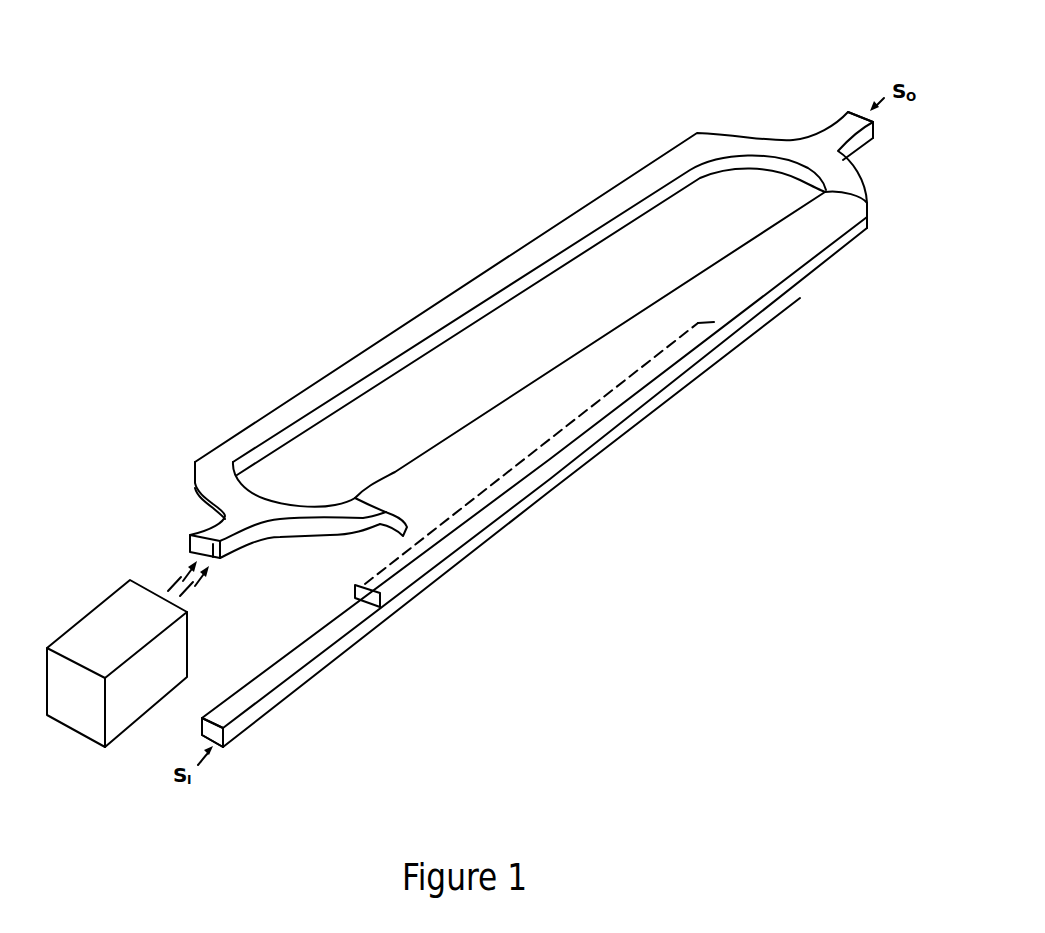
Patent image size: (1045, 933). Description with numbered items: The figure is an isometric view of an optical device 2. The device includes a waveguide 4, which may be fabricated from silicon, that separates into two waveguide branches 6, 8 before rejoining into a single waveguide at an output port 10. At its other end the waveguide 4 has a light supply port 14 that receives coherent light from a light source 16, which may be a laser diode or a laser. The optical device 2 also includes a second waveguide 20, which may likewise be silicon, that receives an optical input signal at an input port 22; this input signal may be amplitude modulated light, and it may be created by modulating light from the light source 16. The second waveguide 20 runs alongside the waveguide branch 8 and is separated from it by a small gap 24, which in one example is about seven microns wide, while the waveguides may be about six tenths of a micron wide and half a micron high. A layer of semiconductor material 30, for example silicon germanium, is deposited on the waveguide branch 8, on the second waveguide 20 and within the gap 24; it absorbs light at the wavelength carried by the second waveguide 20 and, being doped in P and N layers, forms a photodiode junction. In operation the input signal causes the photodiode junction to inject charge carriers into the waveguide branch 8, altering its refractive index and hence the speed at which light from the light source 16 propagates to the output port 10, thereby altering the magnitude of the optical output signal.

The optical device 2 is at (636, 60).
The waveguide 4 is at (224, 522).
The waveguide branch 6 is at (479, 299).
The waveguide branch 8 is at (621, 326).
The output port 10 is at (879, 131).
The light supply port 14 is at (215, 558).
The light source 16 is at (96, 633).
The second waveguide 20 is at (305, 680).
The input port 22 is at (222, 738).
The gap 24 is at (714, 322).
The semiconductor material 30 is at (591, 397).